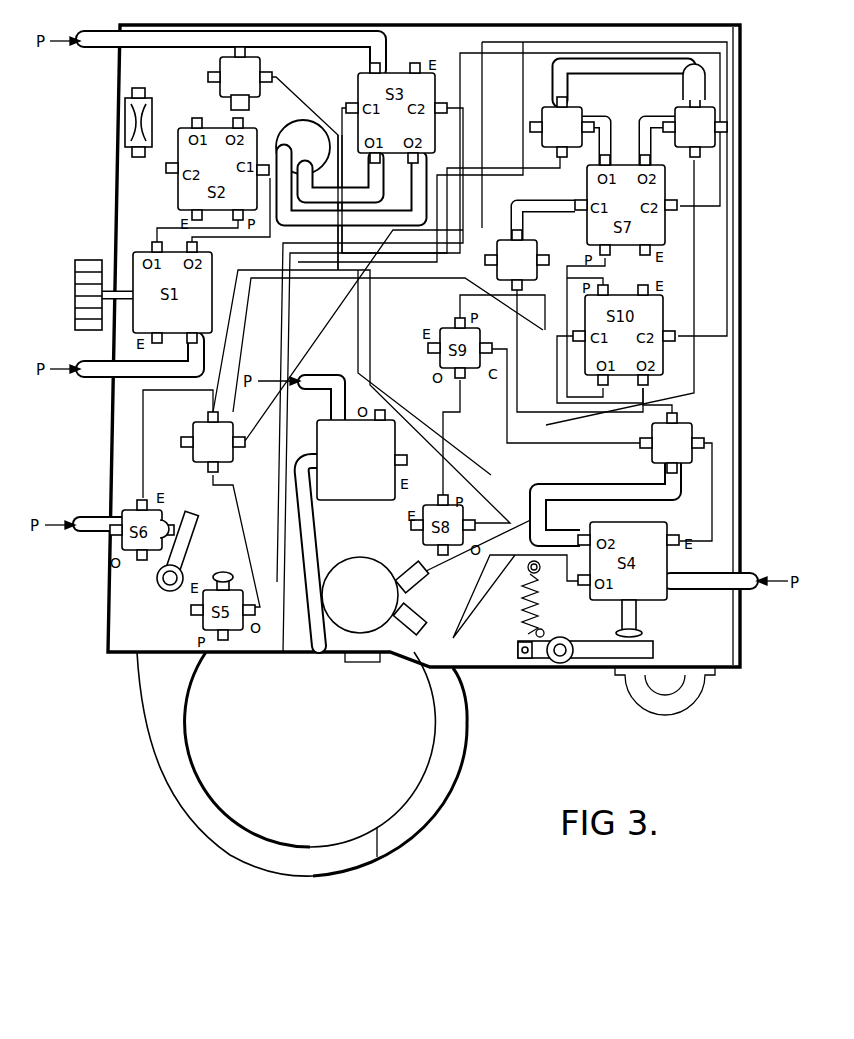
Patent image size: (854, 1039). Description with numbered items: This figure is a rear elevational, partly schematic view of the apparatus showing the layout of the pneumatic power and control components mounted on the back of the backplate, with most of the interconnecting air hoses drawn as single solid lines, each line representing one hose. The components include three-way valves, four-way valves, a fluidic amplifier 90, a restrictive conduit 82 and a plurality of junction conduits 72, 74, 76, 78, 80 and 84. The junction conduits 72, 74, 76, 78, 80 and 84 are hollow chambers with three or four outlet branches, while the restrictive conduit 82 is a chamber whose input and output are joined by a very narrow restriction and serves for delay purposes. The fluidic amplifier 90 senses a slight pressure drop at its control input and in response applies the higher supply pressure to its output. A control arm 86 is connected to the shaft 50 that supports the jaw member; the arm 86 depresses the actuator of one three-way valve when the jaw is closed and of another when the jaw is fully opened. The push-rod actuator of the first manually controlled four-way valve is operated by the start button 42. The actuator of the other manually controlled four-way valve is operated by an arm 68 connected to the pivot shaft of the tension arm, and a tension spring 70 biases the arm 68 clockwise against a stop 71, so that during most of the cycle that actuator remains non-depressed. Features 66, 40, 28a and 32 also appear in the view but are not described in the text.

The junction conduit 80 is at (222, 70).
The restrictive conduit 82 is at (144, 120).
The start button 42 is at (78, 300).
The junction conduit 84 is at (200, 432).
The control arm 86 is at (207, 514).
The shaft 50 is at (160, 590).
The fluidic amplifier 90 is at (392, 507).
The cam 66 is at (374, 606).
The tension spring 70 is at (518, 594).
The stop 71 is at (545, 629).
The arm 68 is at (598, 648).
The roller 40 is at (705, 708).
The loop 28a is at (195, 758).
The loop guide 32 is at (470, 756).
The junction conduit 72 is at (648, 452).
The junction conduit 74 is at (535, 251).
The junction conduit 76 is at (546, 108).
The junction conduit 78 is at (680, 108).